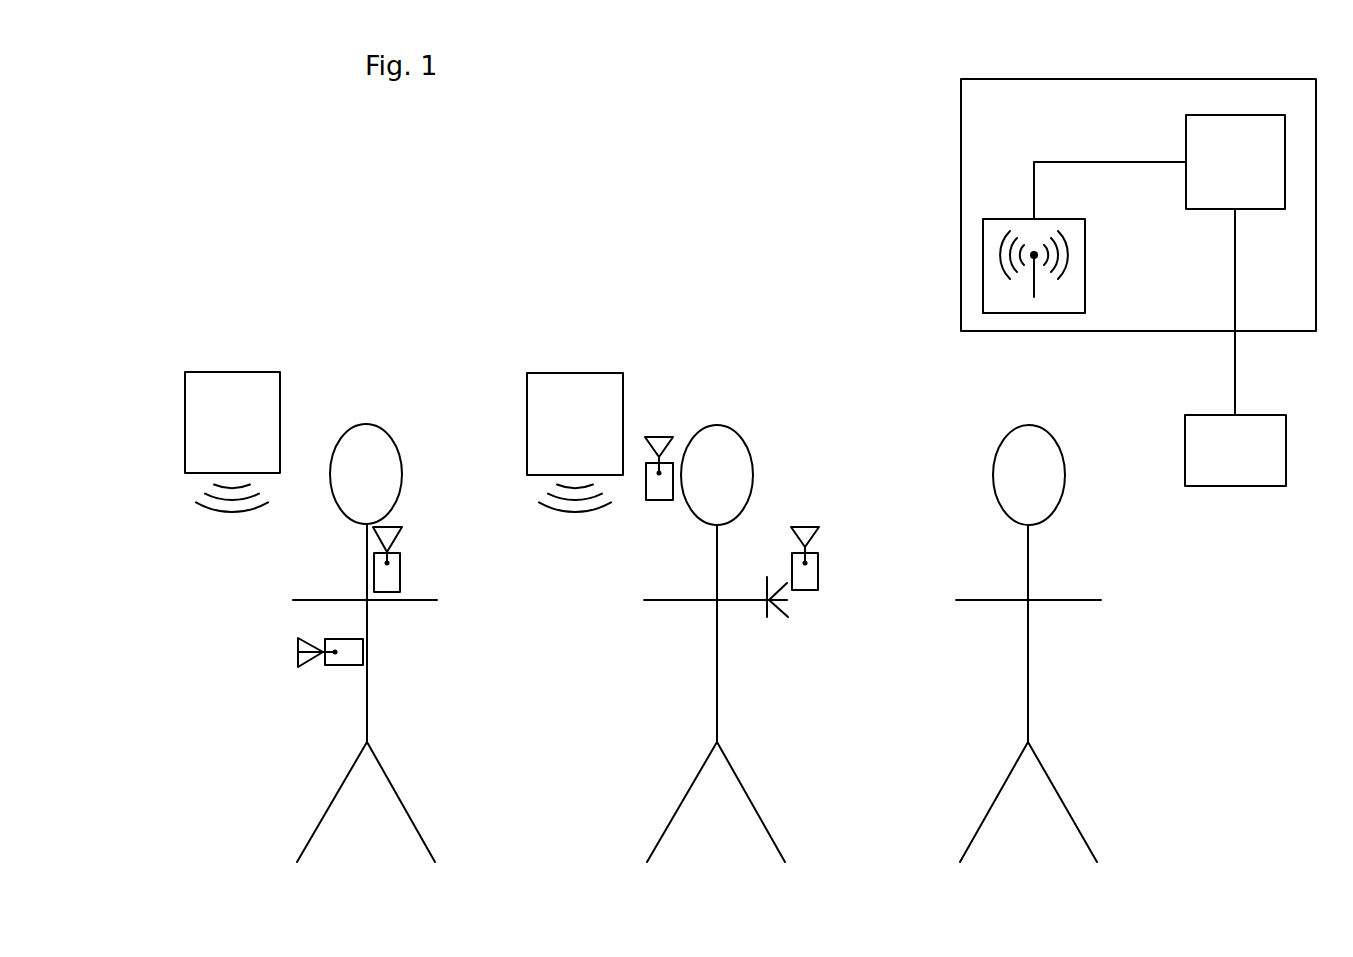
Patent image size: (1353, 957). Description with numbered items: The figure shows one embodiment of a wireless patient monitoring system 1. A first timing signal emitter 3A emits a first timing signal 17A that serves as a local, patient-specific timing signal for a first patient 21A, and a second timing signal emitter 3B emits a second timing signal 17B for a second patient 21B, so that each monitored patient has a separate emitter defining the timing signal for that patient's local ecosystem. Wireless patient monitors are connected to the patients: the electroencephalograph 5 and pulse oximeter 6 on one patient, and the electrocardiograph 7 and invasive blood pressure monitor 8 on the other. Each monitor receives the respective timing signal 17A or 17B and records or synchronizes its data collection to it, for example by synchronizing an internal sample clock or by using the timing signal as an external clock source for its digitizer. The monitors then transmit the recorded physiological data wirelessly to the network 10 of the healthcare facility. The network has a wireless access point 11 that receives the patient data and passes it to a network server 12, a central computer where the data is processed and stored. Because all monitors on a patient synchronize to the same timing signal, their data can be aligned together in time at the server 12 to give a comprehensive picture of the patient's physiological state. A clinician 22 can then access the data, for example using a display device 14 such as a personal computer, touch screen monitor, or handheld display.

The monitoring system 1 is at (487, 195).
The first timing signal emitter 3A is at (215, 377).
The second timing signal emitter 3B is at (562, 377).
The electroencephalograph 5 is at (653, 498).
The pulse oximeter 6 is at (808, 577).
The electrocardiograph 7 is at (397, 580).
The invasive blood pressure monitor 8 is at (330, 662).
The network 10 is at (973, 124).
The wireless access point 11 is at (992, 220).
The network server 12 is at (1235, 265).
The display device 14 is at (1235, 450).
The first timing signal 17A is at (225, 536).
The second timing signal 17B is at (577, 533).
The first patient 21A is at (358, 438).
The second patient 21B is at (728, 438).
The clinician 22 is at (1026, 438).